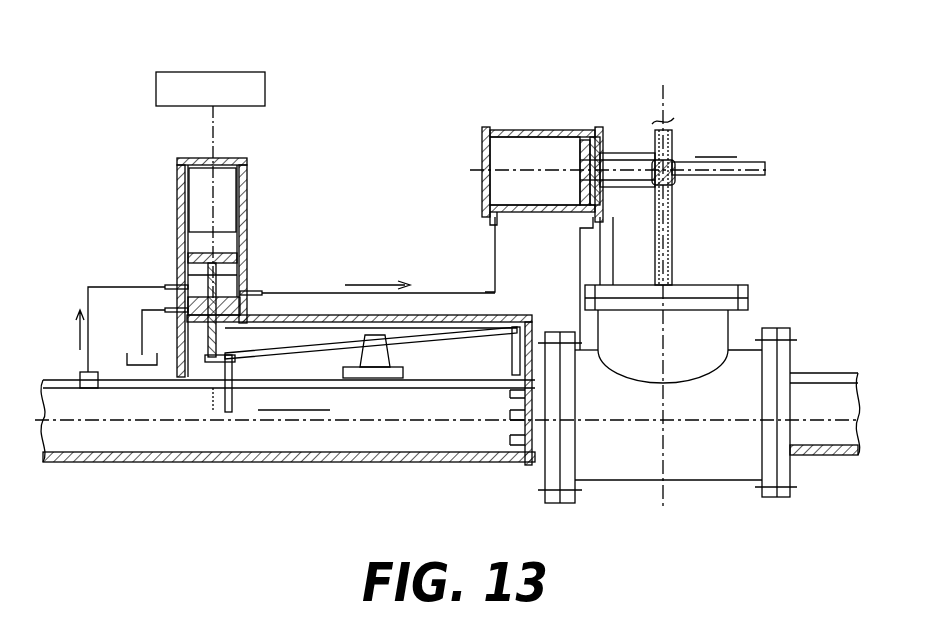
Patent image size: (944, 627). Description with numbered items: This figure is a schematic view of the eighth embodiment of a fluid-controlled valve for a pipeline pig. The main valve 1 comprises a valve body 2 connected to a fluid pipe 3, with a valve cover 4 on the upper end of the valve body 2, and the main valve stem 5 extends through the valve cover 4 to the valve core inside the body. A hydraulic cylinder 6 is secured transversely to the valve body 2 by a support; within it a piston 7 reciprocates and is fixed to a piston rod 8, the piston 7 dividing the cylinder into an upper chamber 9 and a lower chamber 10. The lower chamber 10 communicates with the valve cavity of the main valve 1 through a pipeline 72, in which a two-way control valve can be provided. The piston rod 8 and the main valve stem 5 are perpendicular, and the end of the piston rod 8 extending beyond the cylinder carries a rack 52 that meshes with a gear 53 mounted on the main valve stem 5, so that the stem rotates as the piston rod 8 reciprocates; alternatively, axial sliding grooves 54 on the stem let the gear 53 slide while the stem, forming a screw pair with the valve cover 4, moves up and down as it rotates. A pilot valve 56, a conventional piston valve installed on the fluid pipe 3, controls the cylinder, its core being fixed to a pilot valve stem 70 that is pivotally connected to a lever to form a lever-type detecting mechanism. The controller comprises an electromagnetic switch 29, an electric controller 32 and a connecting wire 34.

The main valve 1 is at (645, 455).
The valve body 2 is at (712, 345).
The fluid pipe 3 is at (346, 440).
The valve cover 4 is at (715, 292).
The valve stem 5 is at (673, 268).
The hydraulic cylinder 6 is at (483, 165).
The piston 7 is at (575, 185).
The piston rod 8 is at (618, 165).
The upper chamber 9 is at (522, 130).
The lower chamber 10 is at (575, 135).
The electromagnetic switch 29 is at (233, 190).
The electric controller 32 is at (265, 88).
The connecting wire 34 is at (218, 150).
The rack 52 is at (750, 176).
The gear 53 is at (677, 178).
The axial sliding grooves 54 is at (673, 230).
The pilot valve 56 is at (247, 262).
The pilot valve stem 70 is at (247, 284).
The pipeline 72 is at (578, 256).